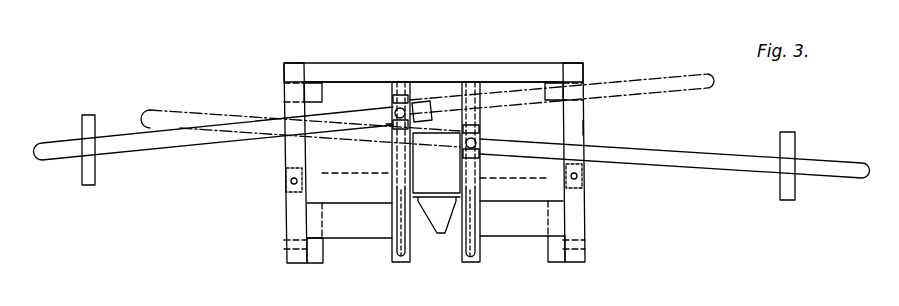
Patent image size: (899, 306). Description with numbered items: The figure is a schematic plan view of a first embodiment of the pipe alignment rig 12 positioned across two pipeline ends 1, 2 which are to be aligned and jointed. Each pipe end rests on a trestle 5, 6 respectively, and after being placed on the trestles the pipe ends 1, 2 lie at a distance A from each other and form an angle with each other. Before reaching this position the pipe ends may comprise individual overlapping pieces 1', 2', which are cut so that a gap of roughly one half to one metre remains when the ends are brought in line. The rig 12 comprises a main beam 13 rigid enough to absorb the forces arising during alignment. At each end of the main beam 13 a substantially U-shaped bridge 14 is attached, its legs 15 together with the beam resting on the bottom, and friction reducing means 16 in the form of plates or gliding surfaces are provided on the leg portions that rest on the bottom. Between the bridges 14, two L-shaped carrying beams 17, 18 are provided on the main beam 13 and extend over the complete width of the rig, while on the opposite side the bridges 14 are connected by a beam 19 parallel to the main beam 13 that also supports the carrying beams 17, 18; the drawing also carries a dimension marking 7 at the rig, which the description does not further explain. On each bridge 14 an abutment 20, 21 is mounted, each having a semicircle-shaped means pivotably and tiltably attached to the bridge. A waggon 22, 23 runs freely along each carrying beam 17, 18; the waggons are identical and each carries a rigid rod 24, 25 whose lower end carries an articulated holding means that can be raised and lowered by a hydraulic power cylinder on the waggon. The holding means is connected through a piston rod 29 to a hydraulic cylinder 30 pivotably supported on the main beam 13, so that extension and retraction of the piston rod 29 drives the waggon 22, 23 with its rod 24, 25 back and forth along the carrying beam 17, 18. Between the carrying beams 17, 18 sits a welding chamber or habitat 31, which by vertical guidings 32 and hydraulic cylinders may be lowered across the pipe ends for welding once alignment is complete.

The pipeline end 1 is at (214, 139).
The overlapping piece 1' is at (562, 82).
The pipeline end 2 is at (675, 150).
The overlapping piece 2' is at (300, 113).
The trestle 5 is at (83, 128).
The trestle 6 is at (793, 138).
The spacing dimension 7 is at (482, 33).
The pipe alignment rig 12 is at (545, 62).
The main beam 13 is at (360, 239).
The U-shaped bridge 14 is at (290, 204).
The legs 15 is at (285, 90).
The friction reducing means 16 is at (312, 92).
The L-shaped carrying beam 17 is at (392, 192).
The L-shaped carrying beam 18 is at (483, 190).
The beam 19 is at (362, 72).
The abutment 20 is at (286, 181).
The abutment 21 is at (585, 178).
The waggon 22 is at (394, 103).
The waggon 23 is at (478, 152).
The rigid rod 24 is at (386, 124).
The rigid rod 25 is at (583, 127).
The piston rod 29 is at (392, 173).
The hydraulic cylinder 30 is at (388, 233).
The welding chamber 31 is at (429, 168).
The vertical guidings 32 is at (442, 235).
The distance A is at (490, 118).